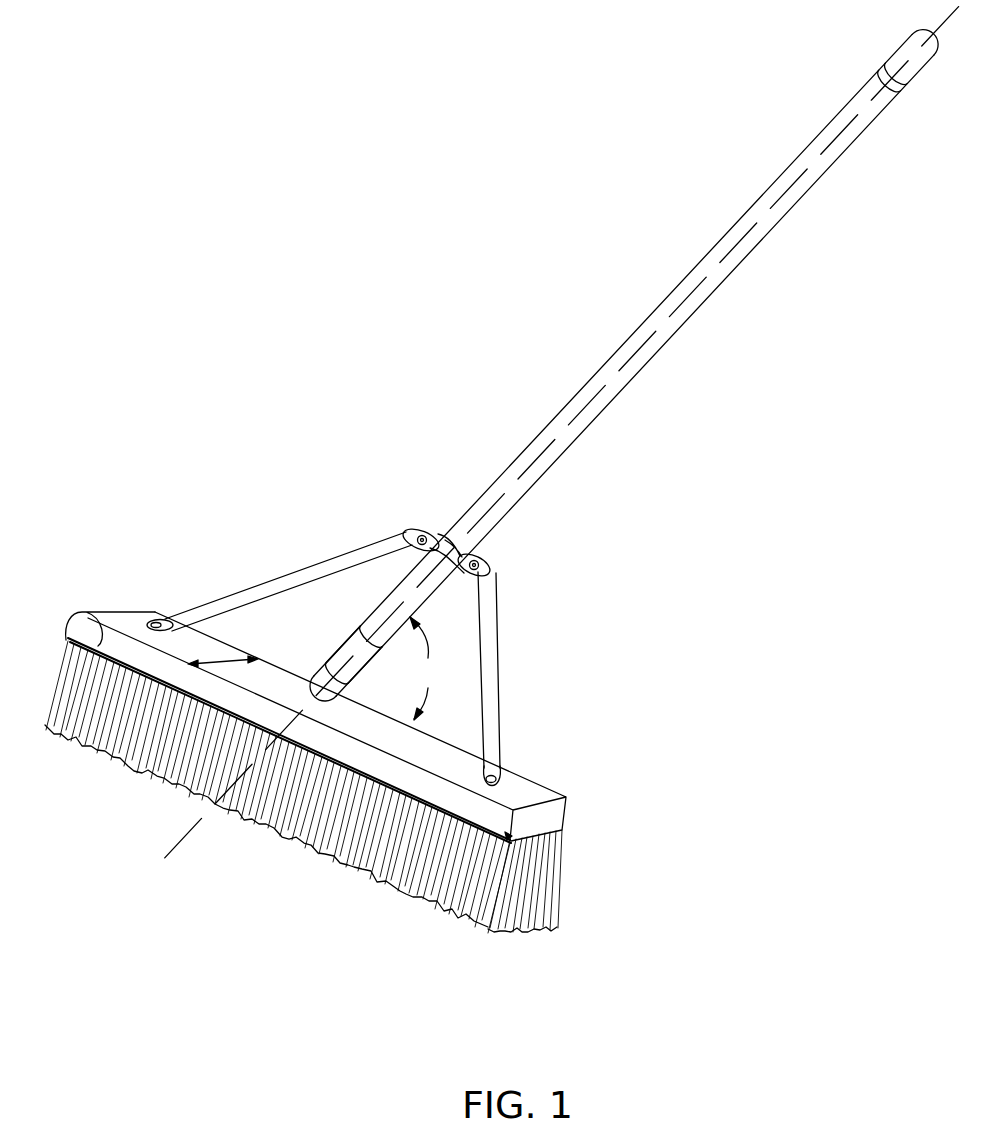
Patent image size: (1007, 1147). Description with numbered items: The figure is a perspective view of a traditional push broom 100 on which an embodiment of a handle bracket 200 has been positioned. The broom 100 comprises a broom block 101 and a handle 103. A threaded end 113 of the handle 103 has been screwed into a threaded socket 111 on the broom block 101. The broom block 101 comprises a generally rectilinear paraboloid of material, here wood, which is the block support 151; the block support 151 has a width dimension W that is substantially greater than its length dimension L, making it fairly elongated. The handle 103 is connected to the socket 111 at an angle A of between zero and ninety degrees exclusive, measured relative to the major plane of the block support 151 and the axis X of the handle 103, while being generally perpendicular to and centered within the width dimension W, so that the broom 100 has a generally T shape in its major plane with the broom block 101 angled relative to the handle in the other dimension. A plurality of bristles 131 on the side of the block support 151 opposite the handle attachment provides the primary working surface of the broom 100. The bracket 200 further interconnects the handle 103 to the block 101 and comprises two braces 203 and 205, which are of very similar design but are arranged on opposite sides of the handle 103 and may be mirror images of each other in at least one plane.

The push broom 100 is at (785, 338).
The handle 103 is at (673, 300).
The axis X is at (894, 62).
The threaded socket 111 is at (307, 684).
The threaded end 113 is at (350, 647).
The broom block 101 is at (562, 815).
The bristles 131 is at (549, 902).
The block support 151 is at (531, 786).
The handle bracket 200 is at (505, 628).
The brace 203 is at (357, 556).
The brace 205 is at (494, 572).
The width dimension W is at (103, 612).
The length dimension L is at (218, 658).
The angle A is at (423, 668).